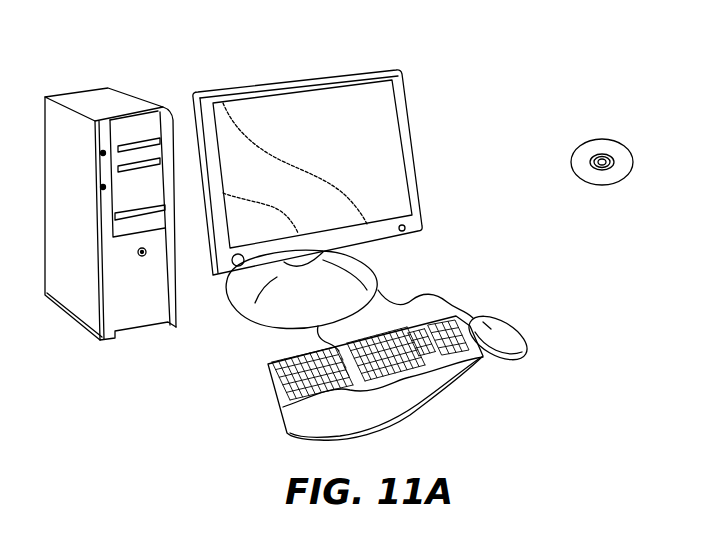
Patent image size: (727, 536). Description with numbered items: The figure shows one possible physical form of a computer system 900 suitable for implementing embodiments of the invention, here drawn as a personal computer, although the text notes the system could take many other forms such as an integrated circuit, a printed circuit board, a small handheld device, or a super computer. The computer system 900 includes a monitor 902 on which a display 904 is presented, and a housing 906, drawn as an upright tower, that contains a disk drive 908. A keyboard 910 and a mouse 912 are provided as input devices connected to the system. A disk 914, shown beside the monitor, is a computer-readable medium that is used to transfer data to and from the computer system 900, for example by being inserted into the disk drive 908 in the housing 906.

The computer system 900 is at (528, 54).
The monitor 902 is at (417, 168).
The display 904 is at (373, 108).
The housing 906 is at (95, 93).
The disk drive 908 is at (157, 209).
The keyboard 910 is at (277, 403).
The mouse 912 is at (520, 329).
The disk 914 is at (618, 138).